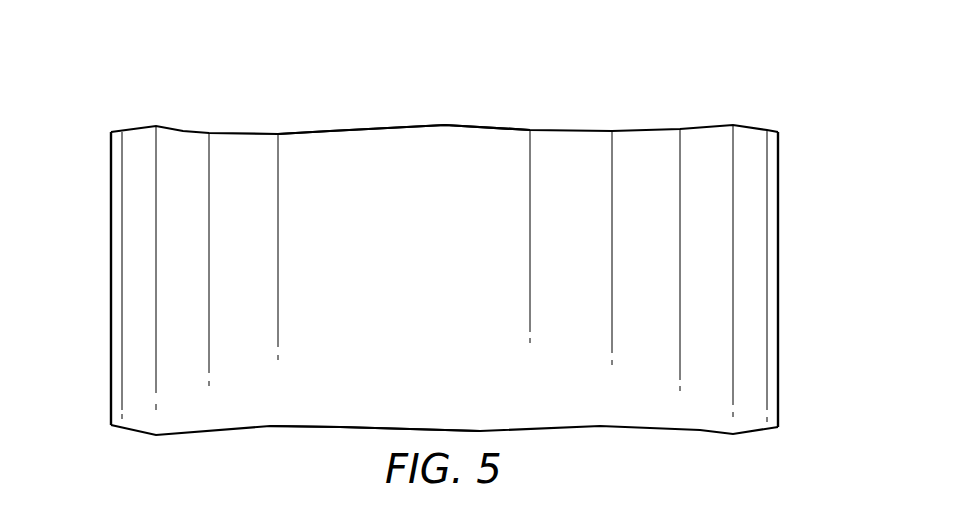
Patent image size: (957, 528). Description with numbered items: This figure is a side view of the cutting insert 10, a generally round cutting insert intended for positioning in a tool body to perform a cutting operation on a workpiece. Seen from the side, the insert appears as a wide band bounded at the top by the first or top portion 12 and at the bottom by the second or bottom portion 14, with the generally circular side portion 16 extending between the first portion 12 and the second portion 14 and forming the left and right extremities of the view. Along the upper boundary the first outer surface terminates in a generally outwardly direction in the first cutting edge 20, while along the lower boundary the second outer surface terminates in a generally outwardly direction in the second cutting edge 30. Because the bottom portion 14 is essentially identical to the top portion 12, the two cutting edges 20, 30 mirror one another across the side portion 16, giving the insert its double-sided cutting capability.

The cutting insert 10 is at (457, 277).
The first or top portion 12 is at (183, 120).
The second or bottom portion 14 is at (197, 443).
The generally circular side portion 16 is at (112, 259).
The first cutting edge 20 is at (323, 131).
The second cutting edge 30 is at (277, 428).